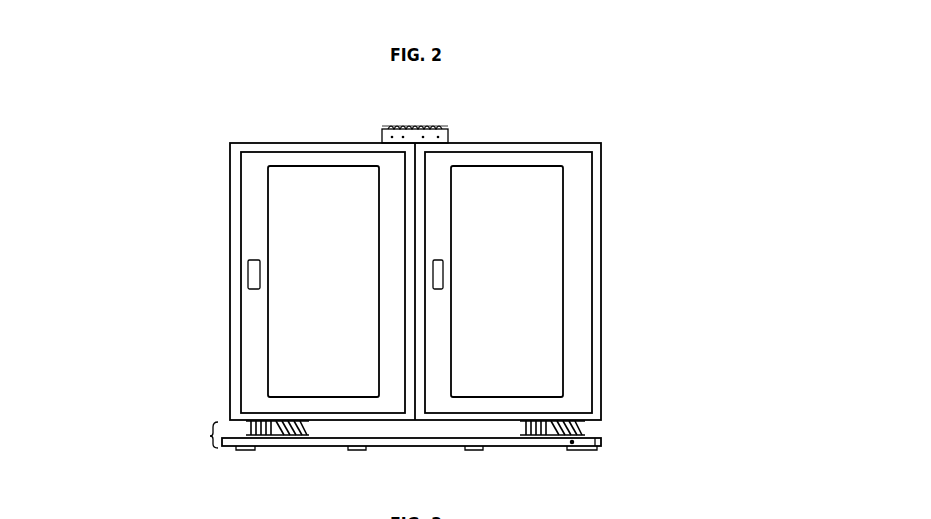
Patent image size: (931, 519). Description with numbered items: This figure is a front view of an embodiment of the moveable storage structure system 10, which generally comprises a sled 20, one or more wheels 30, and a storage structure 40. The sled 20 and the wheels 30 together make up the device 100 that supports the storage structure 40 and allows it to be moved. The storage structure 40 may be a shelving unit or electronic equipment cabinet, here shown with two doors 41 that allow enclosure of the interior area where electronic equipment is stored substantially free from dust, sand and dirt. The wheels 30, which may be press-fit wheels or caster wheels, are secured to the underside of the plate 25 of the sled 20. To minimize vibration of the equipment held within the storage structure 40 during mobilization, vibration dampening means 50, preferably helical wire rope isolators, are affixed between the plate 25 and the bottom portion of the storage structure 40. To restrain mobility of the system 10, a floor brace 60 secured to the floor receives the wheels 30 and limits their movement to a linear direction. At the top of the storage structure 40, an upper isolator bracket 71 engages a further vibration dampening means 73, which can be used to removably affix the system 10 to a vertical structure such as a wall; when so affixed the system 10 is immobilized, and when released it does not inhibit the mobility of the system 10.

The moveable storage structure system 10 is at (712, 181).
The sled 20 is at (318, 440).
The plate 25 is at (602, 438).
The wheels 30 is at (473, 446).
The storage structure 40 is at (416, 225).
The doors 41 is at (357, 324).
The vibration dampening means 50 is at (247, 430).
The floor brace 60 is at (670, 425).
The upper isolator bracket 71 is at (448, 137).
The vibration dampening means 73 is at (382, 126).
The device 100 is at (208, 440).